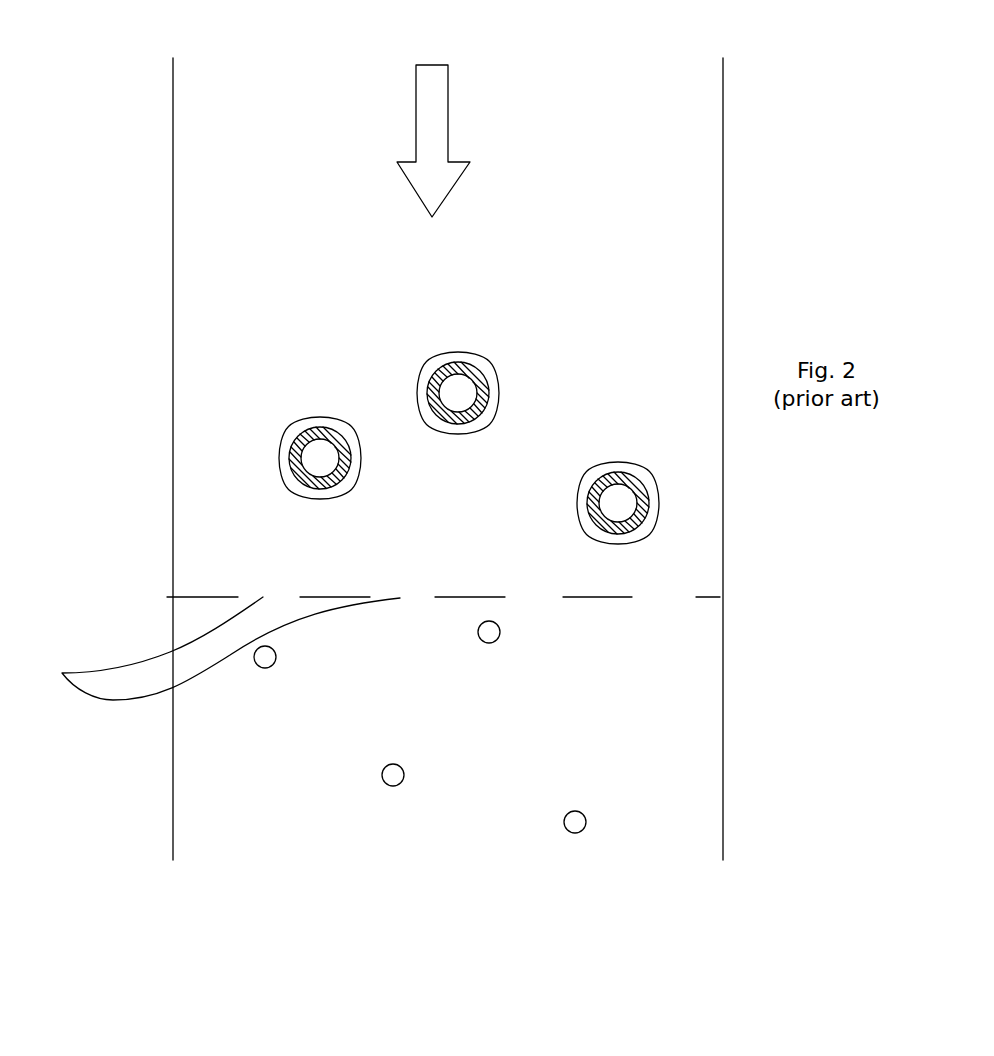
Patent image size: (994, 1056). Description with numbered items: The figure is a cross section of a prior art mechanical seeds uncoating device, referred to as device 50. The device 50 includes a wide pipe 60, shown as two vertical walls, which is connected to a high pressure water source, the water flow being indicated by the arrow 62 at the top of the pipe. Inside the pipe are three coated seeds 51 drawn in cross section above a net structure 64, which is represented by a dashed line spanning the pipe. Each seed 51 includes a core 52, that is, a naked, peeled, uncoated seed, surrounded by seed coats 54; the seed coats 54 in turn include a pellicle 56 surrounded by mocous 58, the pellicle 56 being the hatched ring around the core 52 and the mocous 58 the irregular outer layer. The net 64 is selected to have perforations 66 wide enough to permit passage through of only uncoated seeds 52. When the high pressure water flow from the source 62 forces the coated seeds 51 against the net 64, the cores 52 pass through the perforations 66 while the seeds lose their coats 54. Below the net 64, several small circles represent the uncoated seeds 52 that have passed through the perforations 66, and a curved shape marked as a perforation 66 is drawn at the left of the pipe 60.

The mechanical seeds uncoating device 50 is at (126, 404).
The seed 51 is at (442, 386).
The core 52 is at (332, 463).
The seed coats 54 is at (326, 428).
The pellicle 56 is at (288, 412).
The mocous 58 is at (372, 473).
The wide pipe 60 is at (723, 823).
The arrow 62 is at (436, 130).
The net structure 64 is at (612, 600).
The perforations 66 is at (214, 648).